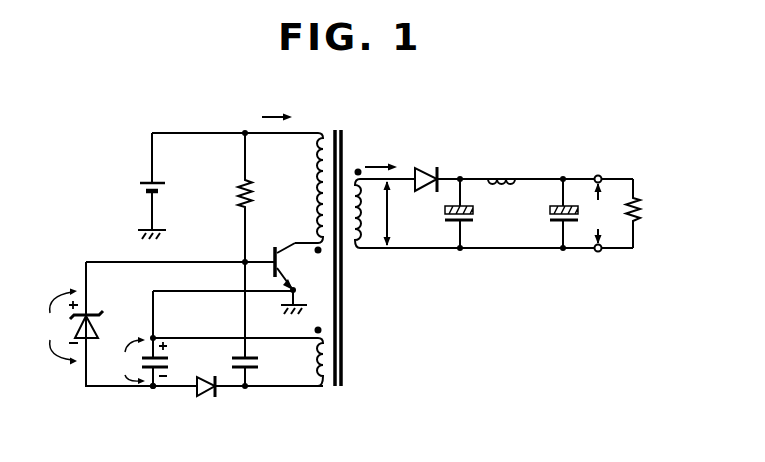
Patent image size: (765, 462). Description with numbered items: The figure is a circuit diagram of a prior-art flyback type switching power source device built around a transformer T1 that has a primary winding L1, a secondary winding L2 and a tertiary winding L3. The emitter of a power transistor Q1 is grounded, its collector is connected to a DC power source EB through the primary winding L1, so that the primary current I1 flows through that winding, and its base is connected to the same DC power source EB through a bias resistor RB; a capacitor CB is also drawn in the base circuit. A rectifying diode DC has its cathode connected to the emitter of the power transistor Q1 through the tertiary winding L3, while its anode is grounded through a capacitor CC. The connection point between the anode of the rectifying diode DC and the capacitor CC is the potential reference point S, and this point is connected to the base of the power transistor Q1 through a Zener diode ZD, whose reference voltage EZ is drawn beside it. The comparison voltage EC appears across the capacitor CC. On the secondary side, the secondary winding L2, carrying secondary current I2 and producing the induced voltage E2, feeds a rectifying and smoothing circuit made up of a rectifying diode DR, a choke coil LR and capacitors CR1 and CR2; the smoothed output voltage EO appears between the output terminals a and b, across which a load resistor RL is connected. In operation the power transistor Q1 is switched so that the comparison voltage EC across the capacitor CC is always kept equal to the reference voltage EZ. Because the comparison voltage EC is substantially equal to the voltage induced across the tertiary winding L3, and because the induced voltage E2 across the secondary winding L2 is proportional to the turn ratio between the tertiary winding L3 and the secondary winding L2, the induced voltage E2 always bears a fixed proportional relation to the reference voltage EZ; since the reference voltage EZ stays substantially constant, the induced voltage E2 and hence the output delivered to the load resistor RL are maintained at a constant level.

The DC power source EB is at (142, 186).
The bias resistor RB is at (228, 197).
The primary winding current I1 is at (286, 105).
The transformer T1 is at (338, 128).
The primary winding L1 is at (312, 210).
The power transistor Q1 is at (291, 265).
The tertiary winding L3 is at (316, 380).
The Zener diode ZD is at (98, 324).
The reference voltage EZ is at (61, 327).
The capacitor CC is at (171, 362).
The comparison voltage EC is at (139, 361).
The potential reference point S is at (153, 389).
The rectifying diode DC is at (213, 406).
The base capacitor CB is at (263, 362).
The secondary winding L2 is at (383, 229).
The secondary winding current I2 is at (385, 154).
The induced voltage E2 is at (395, 213).
The rectifying diode DR is at (433, 164).
The capacitor CR1 is at (447, 213).
The choke coil LR is at (503, 160).
The capacitor CR2 is at (549, 213).
The output terminal a is at (598, 175).
The output terminal b is at (598, 252).
The output voltage EO is at (606, 213).
The load resistor RL is at (649, 213).